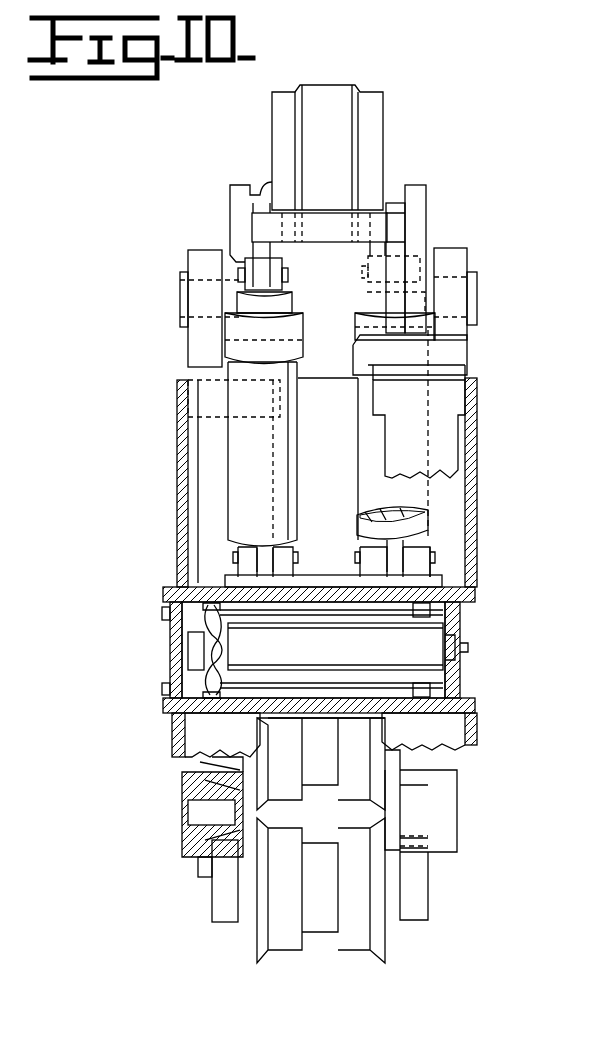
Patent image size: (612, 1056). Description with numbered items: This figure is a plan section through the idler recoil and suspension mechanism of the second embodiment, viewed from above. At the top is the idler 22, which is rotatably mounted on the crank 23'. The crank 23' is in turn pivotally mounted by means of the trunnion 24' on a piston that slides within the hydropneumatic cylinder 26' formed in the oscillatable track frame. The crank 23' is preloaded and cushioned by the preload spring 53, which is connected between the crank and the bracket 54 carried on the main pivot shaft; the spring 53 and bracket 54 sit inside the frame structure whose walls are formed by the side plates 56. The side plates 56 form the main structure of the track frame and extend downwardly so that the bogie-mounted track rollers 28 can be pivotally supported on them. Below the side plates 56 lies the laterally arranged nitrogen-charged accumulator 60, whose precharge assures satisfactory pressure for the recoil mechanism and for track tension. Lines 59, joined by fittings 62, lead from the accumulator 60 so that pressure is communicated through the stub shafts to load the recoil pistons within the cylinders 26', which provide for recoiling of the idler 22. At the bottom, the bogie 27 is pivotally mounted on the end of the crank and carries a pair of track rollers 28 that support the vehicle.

The idler 22 is at (376, 137).
The crank 23' is at (436, 259).
The trunnion 24' is at (481, 294).
The preload spring 53 is at (237, 468).
The bracket 54 is at (365, 547).
The side plate 56 is at (477, 527).
The line 59 is at (344, 650).
The nitrogen-charged accumulator 60 is at (347, 662).
The fitting 62 is at (200, 677).
The hydropneumatic cylinder 26' is at (312, 735).
The bogie 27 is at (212, 893).
The track roller 28 is at (275, 930).